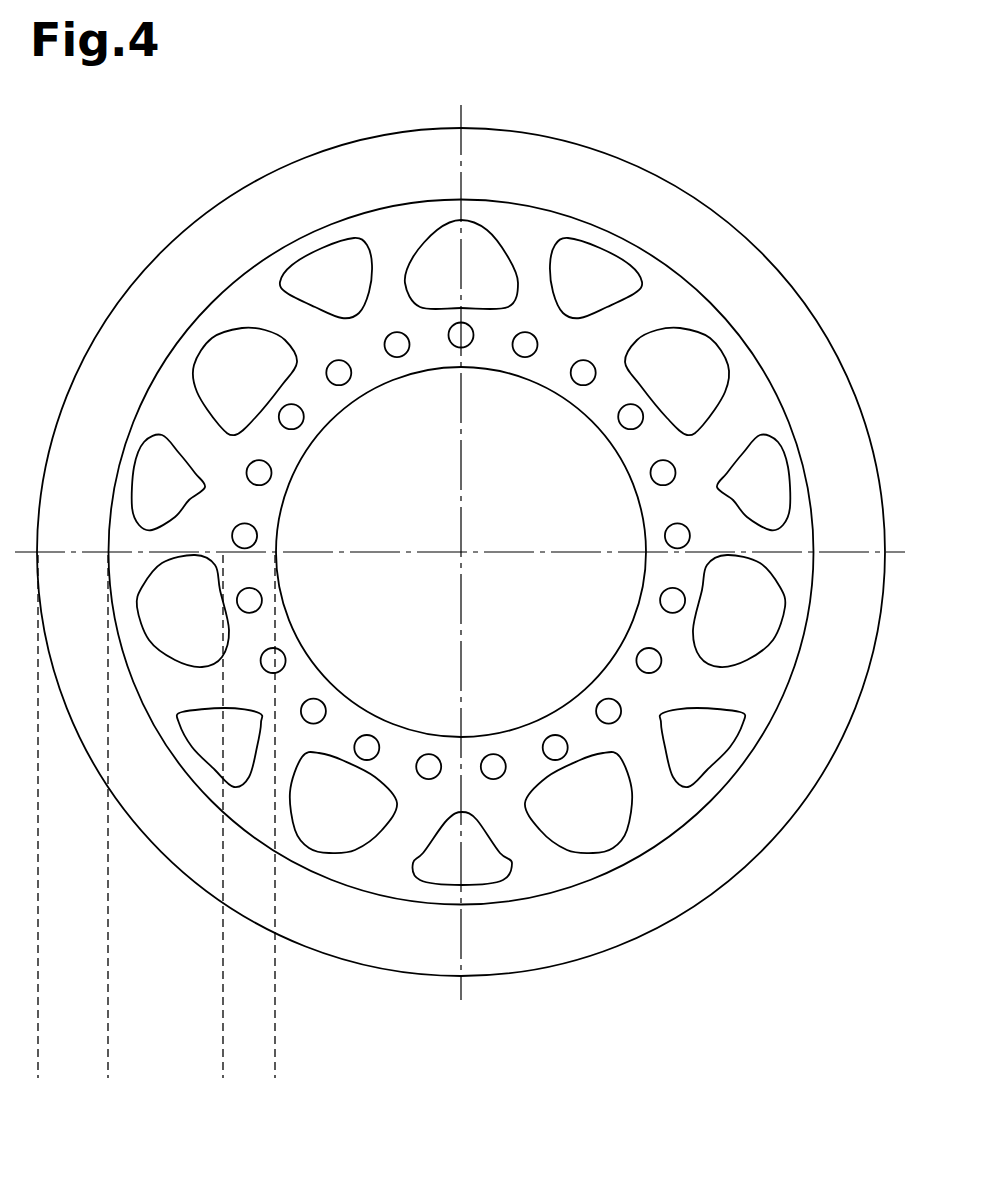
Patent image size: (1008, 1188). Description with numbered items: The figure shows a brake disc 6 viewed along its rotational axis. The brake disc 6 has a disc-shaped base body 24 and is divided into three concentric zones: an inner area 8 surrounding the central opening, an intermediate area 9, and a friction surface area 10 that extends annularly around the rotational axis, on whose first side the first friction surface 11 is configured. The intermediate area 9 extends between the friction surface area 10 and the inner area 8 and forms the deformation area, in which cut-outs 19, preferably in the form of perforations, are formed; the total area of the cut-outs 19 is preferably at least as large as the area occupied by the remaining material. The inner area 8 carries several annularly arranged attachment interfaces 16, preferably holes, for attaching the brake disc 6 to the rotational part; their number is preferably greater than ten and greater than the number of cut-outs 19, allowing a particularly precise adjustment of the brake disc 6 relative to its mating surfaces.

The brake disc 6 is at (658, 182).
The inner area 8 is at (223, 1077).
The intermediate area 9 is at (223, 1077).
The friction surface area 10 is at (38, 1077).
The first friction surface 11 is at (140, 333).
The attachment interfaces 16 is at (348, 382).
The cut-outs 19 is at (687, 785).
The base body 24 is at (530, 723).